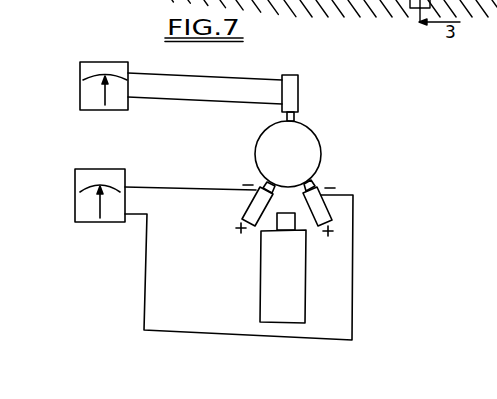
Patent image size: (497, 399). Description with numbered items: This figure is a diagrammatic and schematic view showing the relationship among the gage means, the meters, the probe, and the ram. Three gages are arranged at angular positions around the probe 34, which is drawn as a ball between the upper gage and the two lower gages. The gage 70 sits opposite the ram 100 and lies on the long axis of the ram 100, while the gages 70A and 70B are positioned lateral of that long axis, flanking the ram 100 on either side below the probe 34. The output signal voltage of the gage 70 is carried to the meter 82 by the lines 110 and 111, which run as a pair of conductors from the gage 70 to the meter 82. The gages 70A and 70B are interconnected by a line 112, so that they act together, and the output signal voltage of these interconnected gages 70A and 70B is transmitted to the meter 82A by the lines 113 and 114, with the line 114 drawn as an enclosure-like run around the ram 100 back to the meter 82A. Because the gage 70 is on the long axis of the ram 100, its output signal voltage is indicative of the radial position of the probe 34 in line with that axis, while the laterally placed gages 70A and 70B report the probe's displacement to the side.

The meter 82 is at (87, 88).
The line 110 is at (170, 75).
The line 111 is at (218, 103).
The gage 70 is at (300, 98).
The probe 34 is at (322, 155).
The meter 82A is at (80, 198).
The line 113 is at (152, 185).
The line 114 is at (146, 280).
The gage 70A is at (247, 207).
The gage 70B is at (322, 210).
The line 112 is at (256, 226).
The ram 100 is at (268, 268).